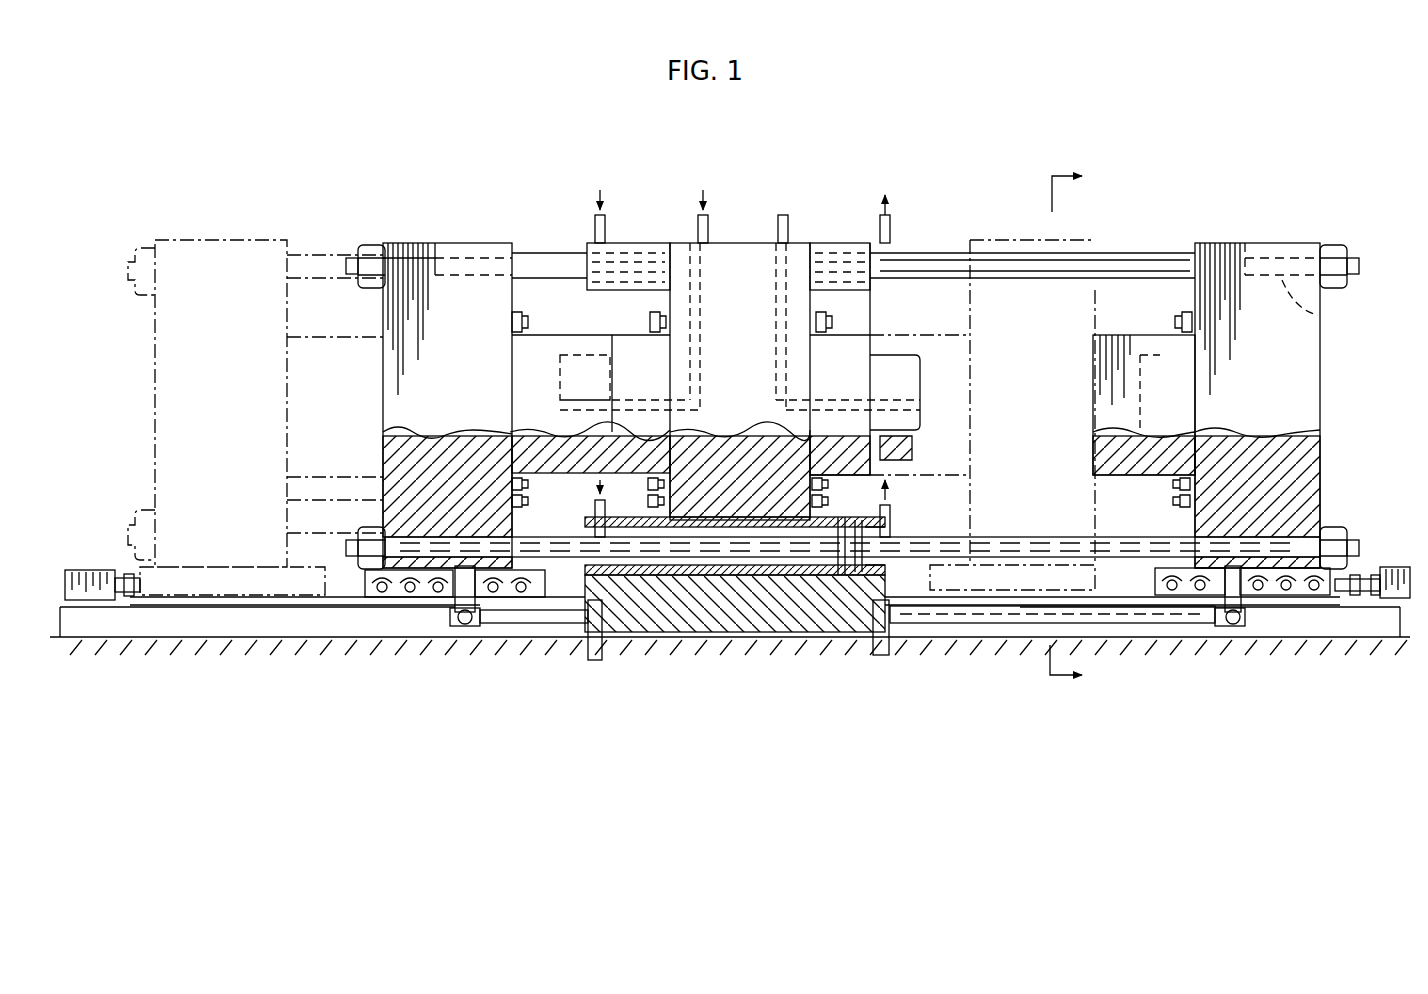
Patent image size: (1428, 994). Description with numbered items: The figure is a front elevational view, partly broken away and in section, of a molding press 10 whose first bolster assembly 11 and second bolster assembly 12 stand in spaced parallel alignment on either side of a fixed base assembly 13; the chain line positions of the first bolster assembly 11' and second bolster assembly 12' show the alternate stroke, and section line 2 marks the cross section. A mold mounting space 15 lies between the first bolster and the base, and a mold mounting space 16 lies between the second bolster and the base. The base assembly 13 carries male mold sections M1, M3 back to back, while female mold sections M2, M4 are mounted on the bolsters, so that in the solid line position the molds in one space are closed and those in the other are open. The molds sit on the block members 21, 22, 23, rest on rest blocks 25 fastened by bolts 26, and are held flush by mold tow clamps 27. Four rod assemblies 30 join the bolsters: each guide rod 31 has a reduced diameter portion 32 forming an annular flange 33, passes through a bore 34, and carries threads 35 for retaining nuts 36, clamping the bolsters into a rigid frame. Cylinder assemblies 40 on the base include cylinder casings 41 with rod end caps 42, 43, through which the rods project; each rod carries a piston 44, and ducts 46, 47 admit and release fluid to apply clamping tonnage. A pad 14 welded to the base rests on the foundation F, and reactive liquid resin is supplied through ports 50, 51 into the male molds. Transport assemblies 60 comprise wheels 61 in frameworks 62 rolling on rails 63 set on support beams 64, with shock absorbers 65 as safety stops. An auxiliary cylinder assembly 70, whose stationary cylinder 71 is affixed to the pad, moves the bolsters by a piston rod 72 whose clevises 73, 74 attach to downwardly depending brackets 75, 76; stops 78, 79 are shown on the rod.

The press 10 is at (975, 140).
The first bolster assembly 11 is at (447, 358).
The first bolster assembly (chain line position) 11' is at (255, 375).
The second bolster assembly 12 is at (1257, 353).
The second bolster assembly (chain line position) 12' is at (982, 367).
The base assembly 13 is at (740, 235).
The pad 14 is at (686, 602).
The mold mounting space 15 is at (560, 300).
The mold mounting space 16 is at (1110, 304).
The block member 21 is at (462, 250).
The block member 22 is at (1298, 246).
The block member 23 is at (796, 262).
The rest block 25 is at (505, 506).
The bolt 26 is at (530, 500).
The mold tow clamp 27 is at (512, 322).
The rod assembly 30 is at (1112, 248).
The guide rod 31 is at (1170, 262).
The reduced diameter portion 32 is at (476, 255).
The annular flange 33 is at (1206, 268).
The bore 34 is at (412, 540).
The threads 35 is at (1360, 266).
The retaining nut 36 is at (372, 245).
The cylinder assembly 40 is at (830, 250).
The cylinder casing 41 is at (656, 262).
The rod end cap 42 is at (602, 262).
The rod end cap 43 is at (900, 285).
The piston 44 is at (858, 268).
The duct 46 is at (596, 218).
The duct 47 is at (888, 216).
The port 50 is at (708, 222).
The port 51 is at (786, 222).
The transport assembly 60 is at (430, 606).
The wheel 61 is at (388, 598).
The framework 62 is at (536, 606).
The rail 63 is at (270, 602).
The support beam 64 is at (160, 622).
The shock absorber 65 is at (110, 570).
The auxiliary cylinder assembly 70 is at (706, 632).
The cylinder 71 is at (766, 626).
The piston rod 72 is at (922, 624).
The clevis 73 is at (476, 627).
The clevis 74 is at (1222, 626).
The bracket 75 is at (458, 622).
The bracket 76 is at (1242, 604).
The stop 78 is at (598, 660).
The stop 79 is at (876, 656).
The foundation F is at (216, 634).
The male mold section M1 is at (615, 377).
The female mold section M2 is at (514, 377).
The male mold section M3 is at (820, 377).
The female mold section M4 is at (1150, 377).
The section line 2 is at (1066, 432).